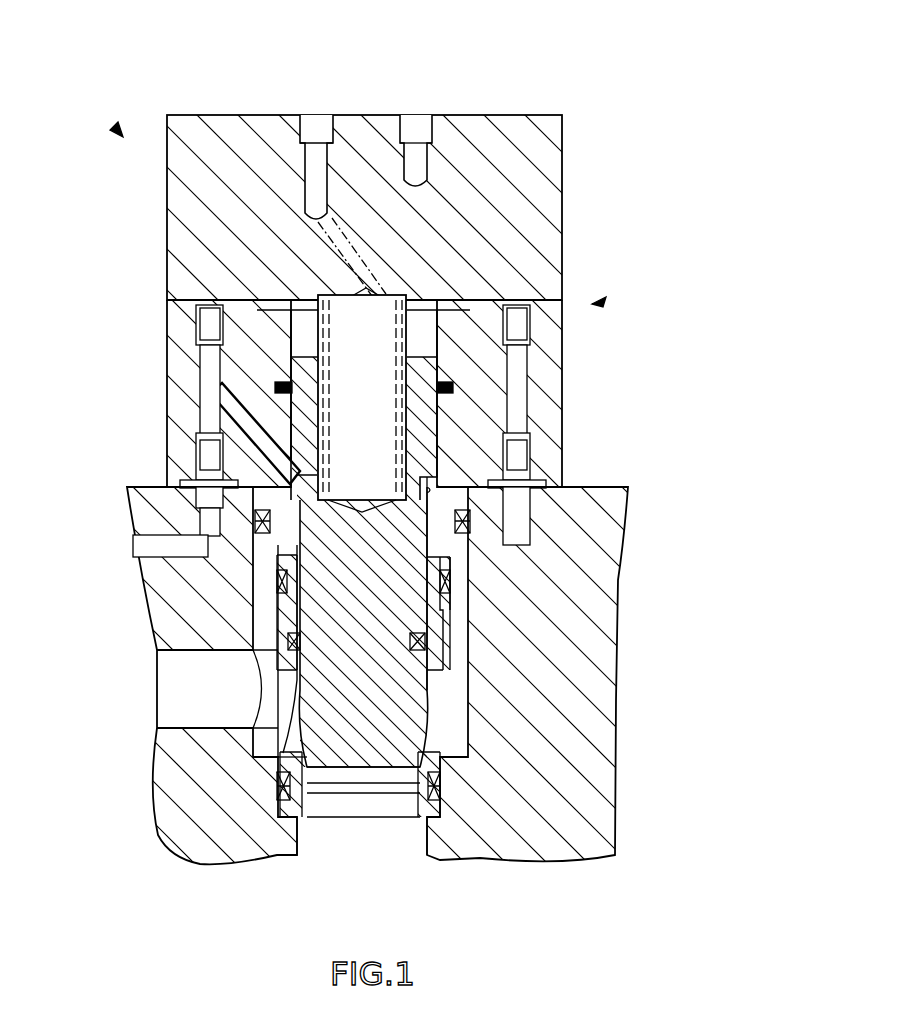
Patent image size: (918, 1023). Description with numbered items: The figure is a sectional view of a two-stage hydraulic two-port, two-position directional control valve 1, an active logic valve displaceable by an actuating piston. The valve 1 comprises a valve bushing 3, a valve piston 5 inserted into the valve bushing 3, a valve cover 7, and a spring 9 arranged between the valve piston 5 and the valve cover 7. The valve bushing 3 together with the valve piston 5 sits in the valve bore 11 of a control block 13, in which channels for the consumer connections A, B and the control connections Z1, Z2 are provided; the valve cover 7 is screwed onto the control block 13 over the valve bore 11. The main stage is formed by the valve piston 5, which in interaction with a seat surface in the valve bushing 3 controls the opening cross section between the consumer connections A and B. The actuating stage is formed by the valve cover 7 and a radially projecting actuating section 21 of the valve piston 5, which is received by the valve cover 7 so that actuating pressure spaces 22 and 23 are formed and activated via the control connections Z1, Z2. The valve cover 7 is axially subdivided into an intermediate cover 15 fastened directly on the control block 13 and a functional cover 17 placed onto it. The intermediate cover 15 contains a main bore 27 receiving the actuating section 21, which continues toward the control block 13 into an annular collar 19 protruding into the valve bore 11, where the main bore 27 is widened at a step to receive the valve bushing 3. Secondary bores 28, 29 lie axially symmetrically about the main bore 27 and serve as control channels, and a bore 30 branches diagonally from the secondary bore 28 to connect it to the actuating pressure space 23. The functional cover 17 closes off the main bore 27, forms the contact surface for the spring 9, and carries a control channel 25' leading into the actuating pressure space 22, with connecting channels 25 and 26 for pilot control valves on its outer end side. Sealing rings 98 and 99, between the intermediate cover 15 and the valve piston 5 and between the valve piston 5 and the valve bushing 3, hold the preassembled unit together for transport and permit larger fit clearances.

The valve 1 is at (118, 130).
The valve bushing 3 is at (470, 625).
The valve piston 5 is at (410, 699).
The valve cover 7 is at (602, 303).
The spring 9 is at (300, 527).
The valve bore 11 is at (460, 657).
The control block 13 is at (598, 510).
The intermediate cover 15 is at (520, 410).
The functional cover 17 is at (540, 196).
The annular collar 19 is at (452, 585).
The actuating section 21 is at (425, 398).
The actuating pressure space 22 is at (300, 336).
The actuating pressure space 23 is at (257, 520).
The connecting channel 25 is at (338, 132).
The control channel 25' is at (249, 257).
The connecting channel 26 is at (412, 127).
The main bore 27 is at (432, 482).
The secondary bore 28 is at (215, 405).
The secondary bore 29 is at (522, 418).
The bore 30 is at (250, 443).
The sealing ring 98 is at (280, 655).
The sealing ring 99 is at (280, 387).
The control connection Z1 is at (175, 546).
The control connection Z2 is at (522, 527).
The consumer connection A is at (345, 800).
The consumer connection B is at (288, 733).